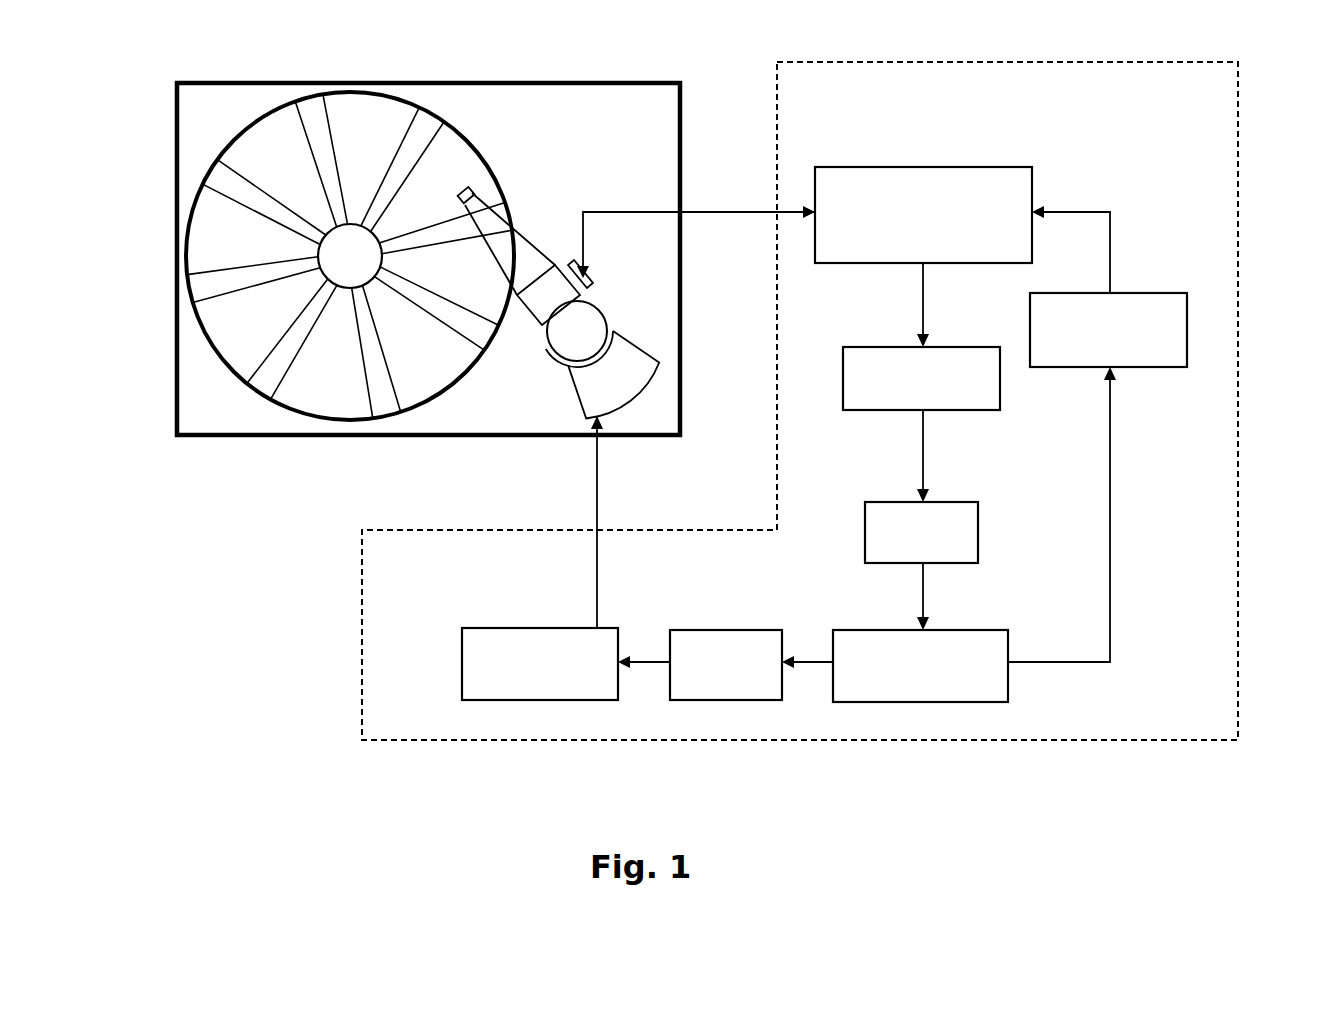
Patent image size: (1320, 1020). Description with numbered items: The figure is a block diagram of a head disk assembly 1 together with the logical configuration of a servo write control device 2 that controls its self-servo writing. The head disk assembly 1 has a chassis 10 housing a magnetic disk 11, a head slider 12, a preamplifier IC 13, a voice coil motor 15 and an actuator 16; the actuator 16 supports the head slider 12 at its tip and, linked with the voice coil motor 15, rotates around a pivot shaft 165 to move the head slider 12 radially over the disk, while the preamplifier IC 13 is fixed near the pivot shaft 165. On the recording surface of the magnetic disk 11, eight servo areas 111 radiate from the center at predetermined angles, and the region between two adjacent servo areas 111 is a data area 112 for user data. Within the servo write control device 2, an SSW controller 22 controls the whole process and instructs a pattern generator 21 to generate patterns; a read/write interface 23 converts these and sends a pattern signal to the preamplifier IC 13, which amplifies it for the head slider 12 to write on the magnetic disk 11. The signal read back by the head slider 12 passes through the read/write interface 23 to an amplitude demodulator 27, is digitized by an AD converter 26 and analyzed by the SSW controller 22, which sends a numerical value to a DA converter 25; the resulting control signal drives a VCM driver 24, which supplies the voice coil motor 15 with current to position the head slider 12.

The head disk assembly 1 is at (540, 58).
The servo write control device 2 is at (1240, 460).
The chassis 10 is at (177, 260).
The magnetic disk 11 is at (392, 98).
The servo area 111 is at (215, 186).
The data area 112 is at (335, 398).
The head slider 12 is at (472, 188).
The preamplifier IC 13 is at (600, 281).
The voice coil motor 15 is at (660, 348).
The actuator 16 is at (504, 350).
The pivot shaft 165 is at (550, 352).
The pattern generator 21 is at (1165, 293).
The SSW controller 22 is at (980, 630).
The read/write interface 23 is at (1003, 167).
The VCM driver 24 is at (490, 628).
The DA converter 25 is at (700, 630).
The AD converter 26 is at (980, 530).
The amplitude demodulator 27 is at (953, 347).